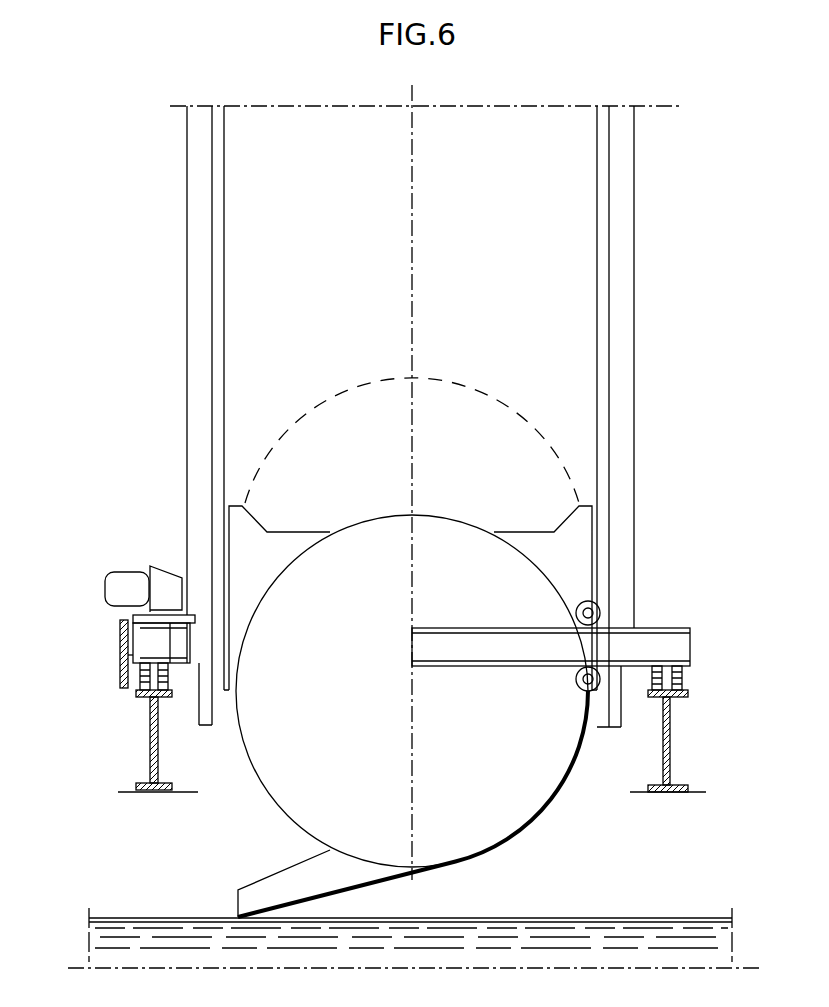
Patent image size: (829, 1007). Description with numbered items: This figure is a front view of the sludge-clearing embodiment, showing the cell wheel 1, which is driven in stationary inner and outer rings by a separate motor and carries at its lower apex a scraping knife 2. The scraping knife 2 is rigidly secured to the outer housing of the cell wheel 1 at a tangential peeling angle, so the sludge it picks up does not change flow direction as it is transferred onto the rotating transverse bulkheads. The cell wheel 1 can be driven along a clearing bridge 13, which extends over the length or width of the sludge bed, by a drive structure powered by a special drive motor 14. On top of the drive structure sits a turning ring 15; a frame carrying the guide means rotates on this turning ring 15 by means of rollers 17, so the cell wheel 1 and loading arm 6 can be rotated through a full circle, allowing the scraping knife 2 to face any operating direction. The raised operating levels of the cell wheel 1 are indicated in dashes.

The wheel 1 is at (505, 412).
The wedge 2 is at (278, 880).
The column 6 is at (214, 118).
The support stand 13 is at (670, 757).
The motor 14 is at (125, 576).
The arm 15 is at (690, 646).
The roller 17 is at (598, 662).